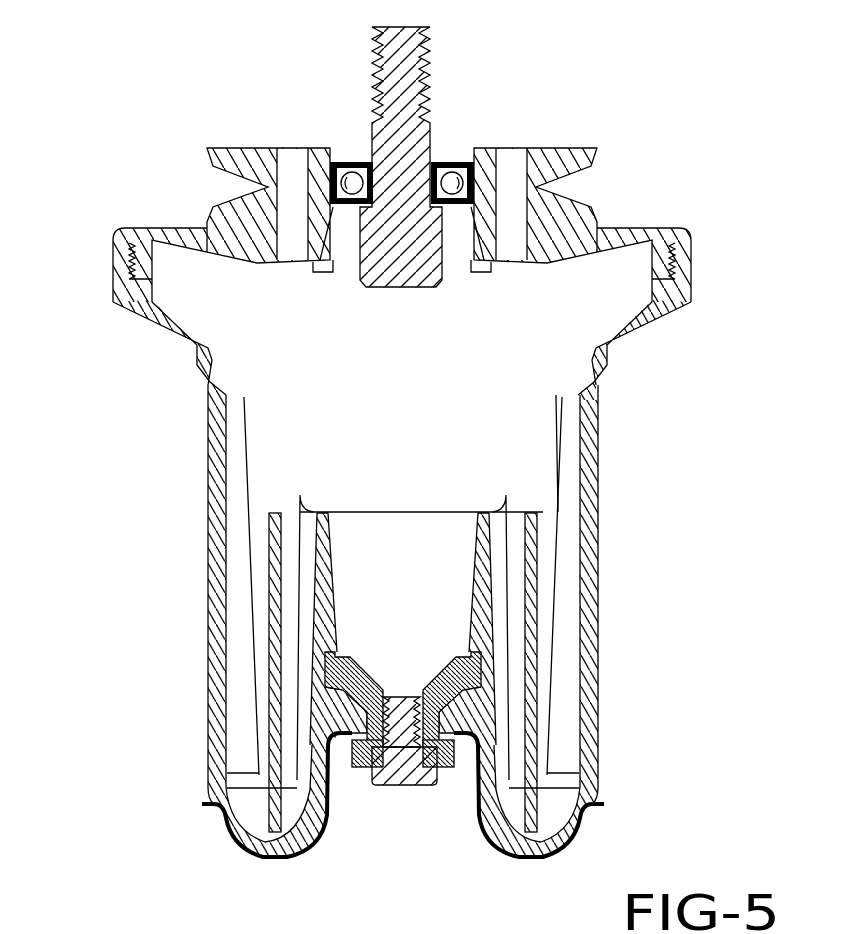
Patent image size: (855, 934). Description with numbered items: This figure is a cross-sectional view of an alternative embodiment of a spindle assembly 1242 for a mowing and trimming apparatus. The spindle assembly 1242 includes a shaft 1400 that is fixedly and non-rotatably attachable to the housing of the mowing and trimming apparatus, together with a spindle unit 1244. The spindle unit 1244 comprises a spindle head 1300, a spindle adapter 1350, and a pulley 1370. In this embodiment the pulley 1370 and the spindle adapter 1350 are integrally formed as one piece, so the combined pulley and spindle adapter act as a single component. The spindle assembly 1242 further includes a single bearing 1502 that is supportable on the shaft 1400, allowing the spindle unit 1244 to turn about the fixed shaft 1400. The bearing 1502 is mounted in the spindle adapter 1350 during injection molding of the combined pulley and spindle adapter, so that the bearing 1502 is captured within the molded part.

The spindle assembly 1242 is at (157, 488).
The spindle unit 1244 is at (168, 350).
The spindle head 1300 is at (210, 624).
The spindle adapter 1350 is at (689, 214).
The pulley 1370 is at (552, 142).
The shaft 1400 is at (398, 290).
The bearing 1502 is at (347, 207).